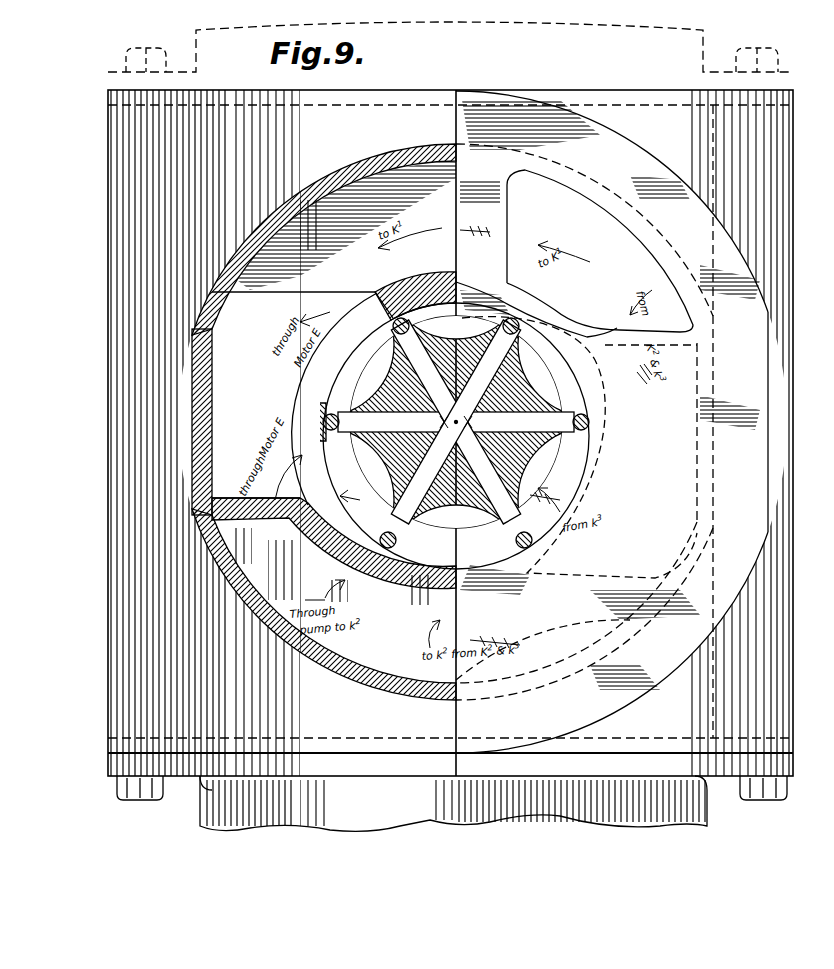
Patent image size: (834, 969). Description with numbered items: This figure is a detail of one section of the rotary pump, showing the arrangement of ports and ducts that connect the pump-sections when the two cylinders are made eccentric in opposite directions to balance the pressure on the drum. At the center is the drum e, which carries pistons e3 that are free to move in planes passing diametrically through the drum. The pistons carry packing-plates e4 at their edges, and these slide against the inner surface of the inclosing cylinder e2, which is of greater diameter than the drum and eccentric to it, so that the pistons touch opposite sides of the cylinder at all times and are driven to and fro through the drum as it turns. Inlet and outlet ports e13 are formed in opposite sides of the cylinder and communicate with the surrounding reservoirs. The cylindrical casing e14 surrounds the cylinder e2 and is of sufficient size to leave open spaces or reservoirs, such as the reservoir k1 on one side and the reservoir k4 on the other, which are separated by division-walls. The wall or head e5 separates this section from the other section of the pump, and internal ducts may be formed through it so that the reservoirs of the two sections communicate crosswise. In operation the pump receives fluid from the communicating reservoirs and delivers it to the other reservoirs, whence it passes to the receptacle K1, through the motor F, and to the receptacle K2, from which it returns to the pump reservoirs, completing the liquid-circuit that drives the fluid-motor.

The motor F is at (128, 372).
The receptacle K1 is at (302, 398).
The receptacle K2 is at (576, 430).
The reservoir k1 is at (483, 555).
The reservoir k4 is at (600, 251).
The drum e is at (390, 462).
The cylinder e2 is at (418, 296).
The pistons e3 is at (456, 427).
The packing-plates e4 is at (500, 318).
The wall or head e5 is at (554, 650).
The inlet and outlet ports e13 is at (311, 422).
The cylindrical casing e14 is at (358, 684).